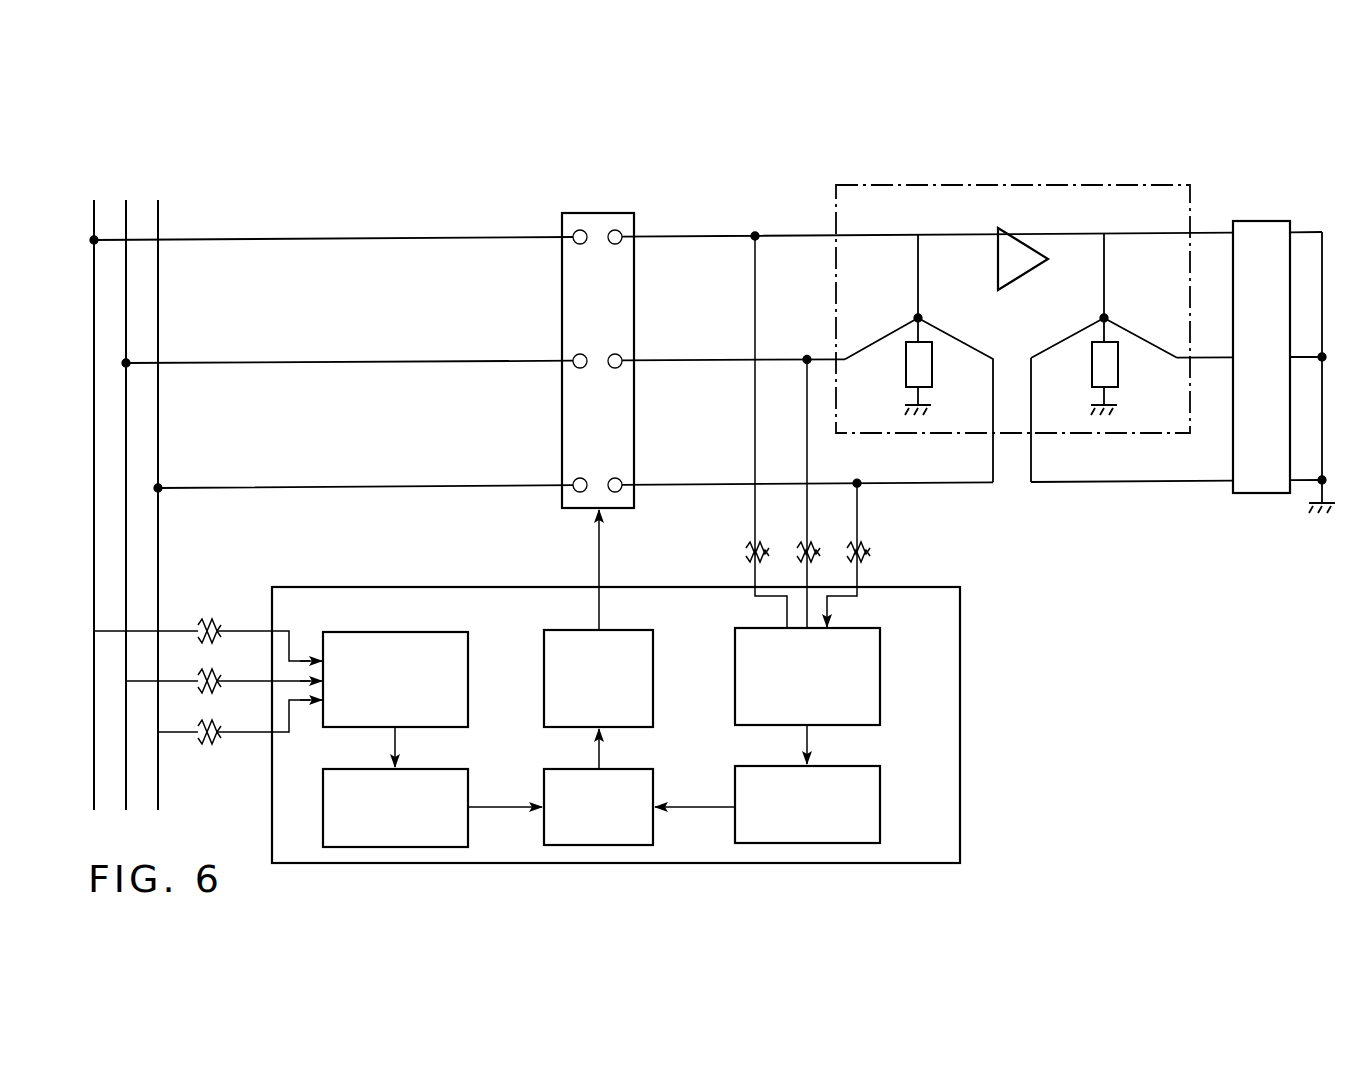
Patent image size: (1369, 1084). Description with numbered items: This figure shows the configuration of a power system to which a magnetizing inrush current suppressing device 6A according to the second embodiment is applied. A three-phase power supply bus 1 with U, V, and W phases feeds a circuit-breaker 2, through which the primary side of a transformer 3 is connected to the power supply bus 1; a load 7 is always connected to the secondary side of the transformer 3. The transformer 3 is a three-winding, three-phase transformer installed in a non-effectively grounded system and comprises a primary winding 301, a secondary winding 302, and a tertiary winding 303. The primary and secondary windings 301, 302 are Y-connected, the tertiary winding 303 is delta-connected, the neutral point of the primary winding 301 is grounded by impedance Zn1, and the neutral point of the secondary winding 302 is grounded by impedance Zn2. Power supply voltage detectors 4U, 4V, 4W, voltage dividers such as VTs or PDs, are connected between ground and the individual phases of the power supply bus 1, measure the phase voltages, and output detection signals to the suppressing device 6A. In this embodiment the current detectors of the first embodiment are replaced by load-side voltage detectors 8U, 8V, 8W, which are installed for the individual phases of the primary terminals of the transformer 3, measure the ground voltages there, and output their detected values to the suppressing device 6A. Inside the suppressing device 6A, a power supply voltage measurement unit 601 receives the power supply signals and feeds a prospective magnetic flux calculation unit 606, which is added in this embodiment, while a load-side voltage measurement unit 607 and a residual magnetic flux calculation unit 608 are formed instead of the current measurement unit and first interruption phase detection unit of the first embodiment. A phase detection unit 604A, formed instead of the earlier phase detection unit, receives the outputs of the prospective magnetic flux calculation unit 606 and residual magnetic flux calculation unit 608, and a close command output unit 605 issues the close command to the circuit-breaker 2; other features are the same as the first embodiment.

The power supply bus 1 is at (152, 136).
The circuit-breaker 2 is at (600, 213).
The transformer 3 is at (1085, 185).
The load 7 is at (1256, 220).
The primary winding 301 is at (917, 318).
The secondary winding 302 is at (1104, 318).
The tertiary winding 303 is at (996, 259).
The impedance Zn1 is at (934, 368).
The impedance Zn2 is at (1119, 368).
The power supply voltage detector 4U is at (204, 628).
The power supply voltage detector 4V is at (212, 674).
The power supply voltage detector 4W is at (212, 726).
The load-side voltage detector 8U is at (743, 546).
The load-side voltage detector 8V is at (794, 546).
The load-side voltage detector 8W is at (844, 546).
The magnetizing inrush current suppressing device 6A is at (960, 690).
The power supply voltage measurement unit 601 is at (470, 683).
The phase detection unit 604A is at (655, 784).
The close command output unit 605 is at (655, 683).
The prospective magnetic flux calculation unit 606 is at (470, 787).
The load-side voltage measurement unit 607 is at (882, 681).
The residual magnetic flux calculation unit 608 is at (882, 803).